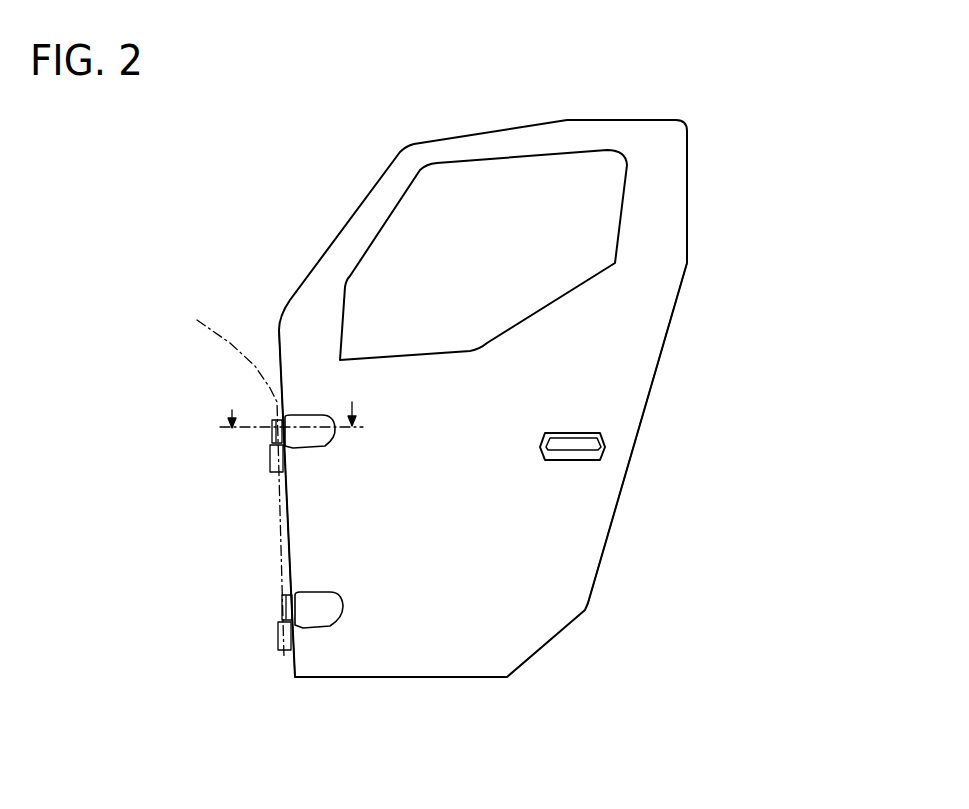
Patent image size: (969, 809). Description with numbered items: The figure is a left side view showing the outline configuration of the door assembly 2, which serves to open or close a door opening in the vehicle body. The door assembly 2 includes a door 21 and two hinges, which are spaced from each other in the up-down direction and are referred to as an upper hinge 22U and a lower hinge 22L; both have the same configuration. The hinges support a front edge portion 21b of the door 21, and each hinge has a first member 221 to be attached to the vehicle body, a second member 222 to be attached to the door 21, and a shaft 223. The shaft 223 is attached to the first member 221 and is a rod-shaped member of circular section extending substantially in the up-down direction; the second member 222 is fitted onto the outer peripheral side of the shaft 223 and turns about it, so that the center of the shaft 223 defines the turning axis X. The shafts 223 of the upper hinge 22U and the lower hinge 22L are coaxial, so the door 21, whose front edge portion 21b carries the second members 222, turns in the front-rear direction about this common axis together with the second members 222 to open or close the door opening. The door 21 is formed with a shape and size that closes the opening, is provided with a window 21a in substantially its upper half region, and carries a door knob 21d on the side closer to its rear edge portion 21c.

The door assembly 2 is at (436, 381).
The door 21 is at (688, 230).
The window 21a is at (383, 275).
The front edge portion 21b is at (302, 492).
The rear edge portion 21c is at (625, 410).
The door knob 21d is at (578, 450).
The upper hinge 22U is at (270, 437).
The lower hinge 22L is at (280, 608).
The first member 221 is at (270, 463).
The second member 222 is at (302, 415).
The shaft 223 is at (270, 417).